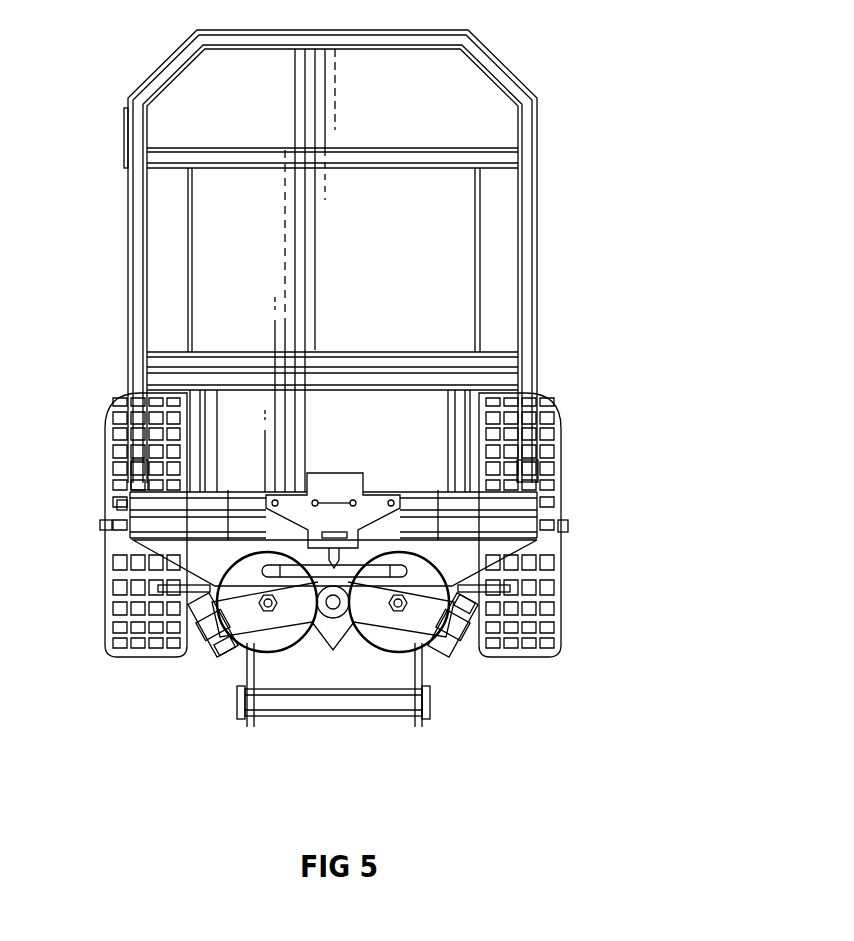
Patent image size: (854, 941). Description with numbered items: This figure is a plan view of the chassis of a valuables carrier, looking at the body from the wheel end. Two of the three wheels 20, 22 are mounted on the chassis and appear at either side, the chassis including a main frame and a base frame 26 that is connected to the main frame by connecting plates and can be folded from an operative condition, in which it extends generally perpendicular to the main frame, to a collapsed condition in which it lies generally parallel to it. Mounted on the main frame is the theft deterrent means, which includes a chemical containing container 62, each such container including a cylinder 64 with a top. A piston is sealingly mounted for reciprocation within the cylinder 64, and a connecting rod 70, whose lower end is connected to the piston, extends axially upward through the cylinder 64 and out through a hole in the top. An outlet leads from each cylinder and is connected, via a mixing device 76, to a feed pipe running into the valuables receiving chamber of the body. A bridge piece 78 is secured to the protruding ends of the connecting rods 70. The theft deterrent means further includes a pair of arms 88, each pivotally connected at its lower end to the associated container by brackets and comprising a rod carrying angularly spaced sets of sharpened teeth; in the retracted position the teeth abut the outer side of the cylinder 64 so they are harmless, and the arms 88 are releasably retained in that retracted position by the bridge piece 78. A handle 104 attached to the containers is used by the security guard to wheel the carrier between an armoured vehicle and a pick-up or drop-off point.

The wheel 20 is at (535, 612).
The wheel 22 is at (128, 605).
The base frame 26 is at (450, 120).
The chemical containing container 62 is at (367, 542).
The cylinder 64 is at (247, 650).
The connecting rod 70 is at (333, 632).
The mixing device 76 is at (335, 556).
The bridge piece 78 is at (240, 608).
The arm 88 is at (202, 650).
The handle 104 is at (344, 700).